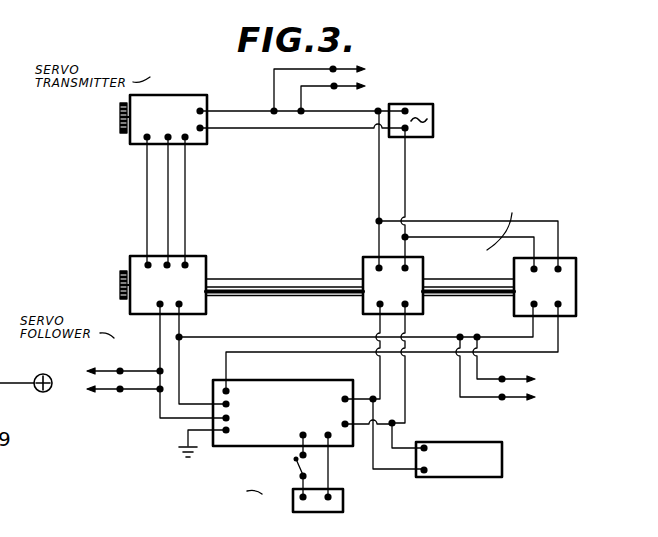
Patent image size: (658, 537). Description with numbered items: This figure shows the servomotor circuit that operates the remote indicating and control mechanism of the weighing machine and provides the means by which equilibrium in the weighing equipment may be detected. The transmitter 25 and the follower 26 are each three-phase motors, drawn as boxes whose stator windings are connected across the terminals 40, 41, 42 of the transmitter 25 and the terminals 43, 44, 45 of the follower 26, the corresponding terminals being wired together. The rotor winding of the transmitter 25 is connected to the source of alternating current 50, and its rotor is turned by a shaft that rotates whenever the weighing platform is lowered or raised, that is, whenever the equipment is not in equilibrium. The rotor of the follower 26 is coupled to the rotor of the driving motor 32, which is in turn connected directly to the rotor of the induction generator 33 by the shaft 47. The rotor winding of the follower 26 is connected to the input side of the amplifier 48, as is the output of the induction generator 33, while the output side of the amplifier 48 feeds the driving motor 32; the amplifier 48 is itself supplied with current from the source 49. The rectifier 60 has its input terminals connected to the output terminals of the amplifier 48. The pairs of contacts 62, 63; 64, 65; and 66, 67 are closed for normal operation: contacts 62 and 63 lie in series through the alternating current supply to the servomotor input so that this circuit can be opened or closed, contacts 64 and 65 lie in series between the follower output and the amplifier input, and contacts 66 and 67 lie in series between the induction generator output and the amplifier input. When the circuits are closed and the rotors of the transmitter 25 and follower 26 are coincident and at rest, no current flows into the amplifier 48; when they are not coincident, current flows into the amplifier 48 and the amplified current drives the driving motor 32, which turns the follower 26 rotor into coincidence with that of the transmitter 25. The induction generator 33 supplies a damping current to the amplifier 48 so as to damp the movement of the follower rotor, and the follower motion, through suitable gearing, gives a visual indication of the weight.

The transmitter 25 is at (176, 103).
The follower 26 is at (150, 312).
The driving motor 32 is at (362, 262).
The induction generator 33 is at (520, 270).
The terminal 40 is at (145, 140).
The terminal 41 is at (174, 132).
The terminal 42 is at (207, 141).
The terminal 43 is at (145, 262).
The terminal 44 is at (160, 262).
The terminal 45 is at (186, 265).
The shaft 47 is at (480, 298).
The amplifier 48 is at (325, 372).
The source 49 is at (292, 500).
The source of alternating current 50 is at (430, 126).
The rectifier 60 is at (503, 456).
The contact 62 is at (333, 86).
The contact 63 is at (346, 95).
The contact 64 is at (111, 391).
The contact 65 is at (111, 373).
The contact 66 is at (512, 374).
The contact 67 is at (521, 365).